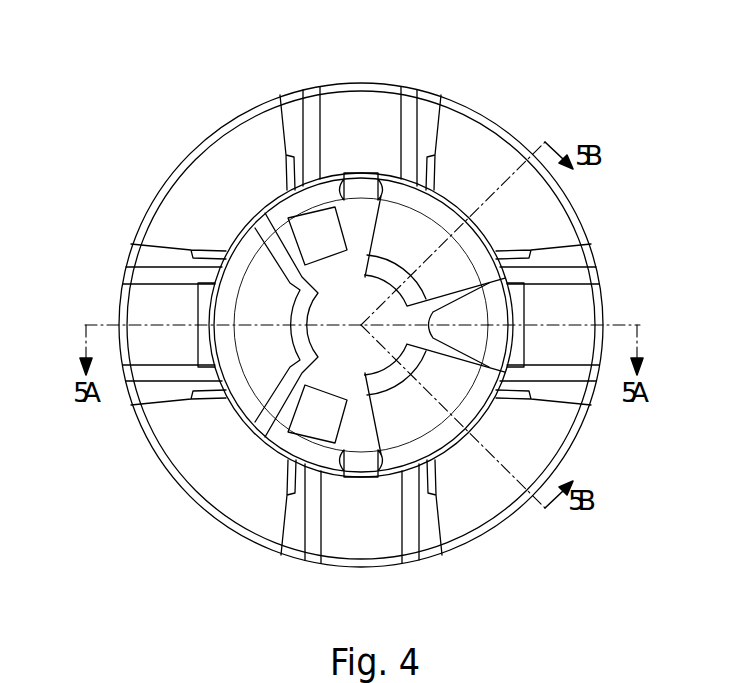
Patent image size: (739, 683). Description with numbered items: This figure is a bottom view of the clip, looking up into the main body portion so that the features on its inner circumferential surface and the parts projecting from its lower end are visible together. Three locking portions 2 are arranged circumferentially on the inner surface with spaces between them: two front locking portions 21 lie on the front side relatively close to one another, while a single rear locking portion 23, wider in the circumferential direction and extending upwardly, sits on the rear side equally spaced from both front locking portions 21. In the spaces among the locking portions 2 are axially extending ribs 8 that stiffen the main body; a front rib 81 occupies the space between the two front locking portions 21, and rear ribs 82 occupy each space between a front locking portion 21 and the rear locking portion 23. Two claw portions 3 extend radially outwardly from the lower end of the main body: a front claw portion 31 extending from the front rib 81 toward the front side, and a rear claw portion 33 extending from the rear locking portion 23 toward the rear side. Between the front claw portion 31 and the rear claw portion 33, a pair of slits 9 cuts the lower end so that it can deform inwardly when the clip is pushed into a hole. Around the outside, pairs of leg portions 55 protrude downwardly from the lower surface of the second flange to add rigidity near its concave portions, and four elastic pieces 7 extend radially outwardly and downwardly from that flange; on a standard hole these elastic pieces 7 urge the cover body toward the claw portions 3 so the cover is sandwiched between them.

The locking portions 2 is at (369, 325).
The front locking portions 21 is at (428, 250).
The rear locking portion 23 is at (285, 316).
The claw portions 3 is at (379, 325).
The front claw portion 31 is at (523, 320).
The rear claw portion 33 is at (207, 303).
The elastic pieces 7 is at (256, 168).
The ribs 8 is at (464, 308).
The front rib 81 is at (473, 319).
The rear ribs 82 is at (338, 240).
The slits 9 is at (340, 182).
The leg portions 55 is at (352, 319).